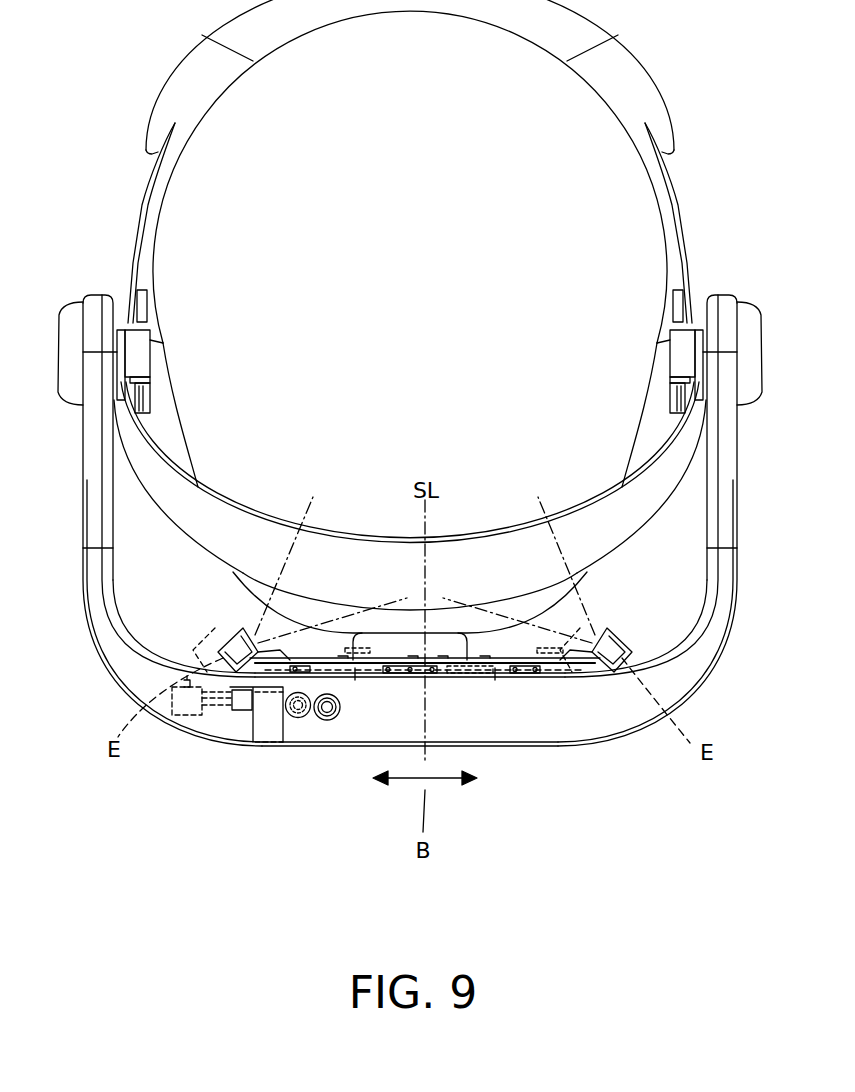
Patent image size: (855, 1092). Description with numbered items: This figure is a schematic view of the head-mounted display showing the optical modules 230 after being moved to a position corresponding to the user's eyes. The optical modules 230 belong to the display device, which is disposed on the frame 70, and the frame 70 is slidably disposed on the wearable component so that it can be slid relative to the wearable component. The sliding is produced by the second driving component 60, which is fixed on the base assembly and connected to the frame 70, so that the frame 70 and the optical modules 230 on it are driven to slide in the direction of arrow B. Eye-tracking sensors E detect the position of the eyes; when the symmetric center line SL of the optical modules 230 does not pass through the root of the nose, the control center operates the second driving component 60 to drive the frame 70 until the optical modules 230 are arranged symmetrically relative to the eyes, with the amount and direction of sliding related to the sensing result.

The second driving component 60 is at (220, 717).
The frame 70 is at (307, 746).
The optical module 230 is at (358, 665).